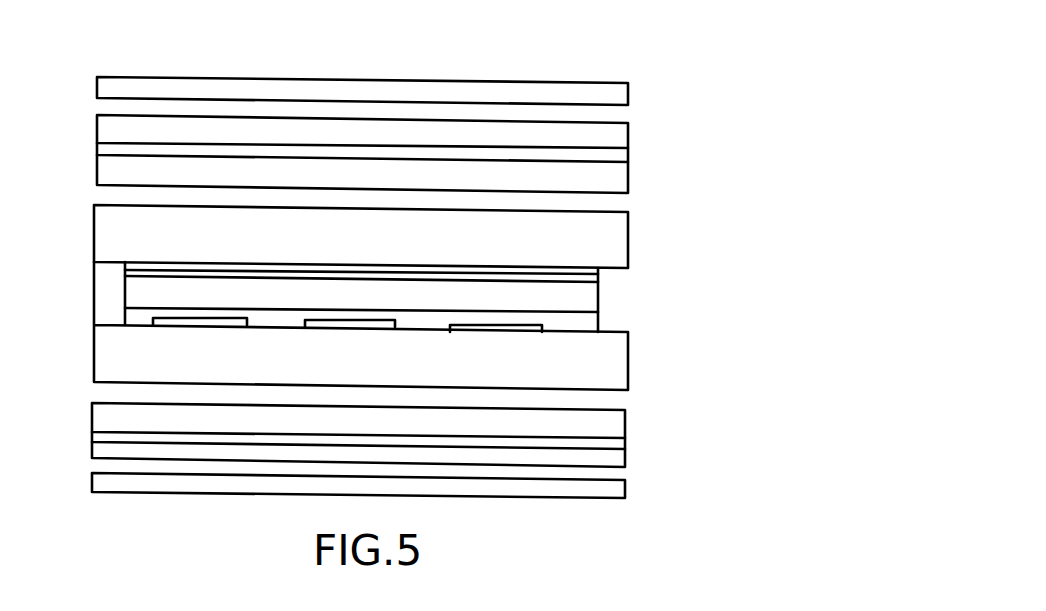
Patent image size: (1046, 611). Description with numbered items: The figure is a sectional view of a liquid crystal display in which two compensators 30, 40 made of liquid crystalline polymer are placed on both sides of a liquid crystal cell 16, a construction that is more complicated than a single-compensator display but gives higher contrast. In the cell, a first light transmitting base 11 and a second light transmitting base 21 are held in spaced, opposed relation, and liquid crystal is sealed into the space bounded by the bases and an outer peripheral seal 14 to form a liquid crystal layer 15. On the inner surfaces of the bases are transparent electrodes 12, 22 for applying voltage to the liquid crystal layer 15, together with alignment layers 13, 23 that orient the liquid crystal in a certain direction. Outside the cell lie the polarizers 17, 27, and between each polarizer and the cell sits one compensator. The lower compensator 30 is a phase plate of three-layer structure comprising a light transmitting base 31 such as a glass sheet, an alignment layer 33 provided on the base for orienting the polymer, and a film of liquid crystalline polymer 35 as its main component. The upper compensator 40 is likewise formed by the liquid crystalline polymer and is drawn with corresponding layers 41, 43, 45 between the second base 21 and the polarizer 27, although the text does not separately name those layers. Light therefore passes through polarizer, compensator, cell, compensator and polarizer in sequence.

The first light transmitting base 11 is at (617, 382).
The transparent electrode 12 is at (528, 329).
The alignment layer 13 is at (590, 325).
The outer peripheral seal 14 is at (115, 318).
The liquid crystal layer 15 is at (83, 251).
The liquid crystal cell 16 is at (385, 294).
The polarizer 17 is at (618, 493).
The second light transmitting base 21 is at (622, 232).
The transparent electrode 22 is at (628, 272).
The alignment layer 23 is at (628, 277).
The polarizer 27 is at (622, 95).
The compensator 30 is at (398, 445).
The light transmitting base 31 is at (613, 425).
The alignment layer 33 is at (625, 443).
The liquid crystalline polymer 35 is at (622, 460).
The compensator 40 is at (393, 131).
The upper polarizer layer 41 is at (622, 178).
The retardation film 43 is at (622, 157).
The protective film 45 is at (622, 138).